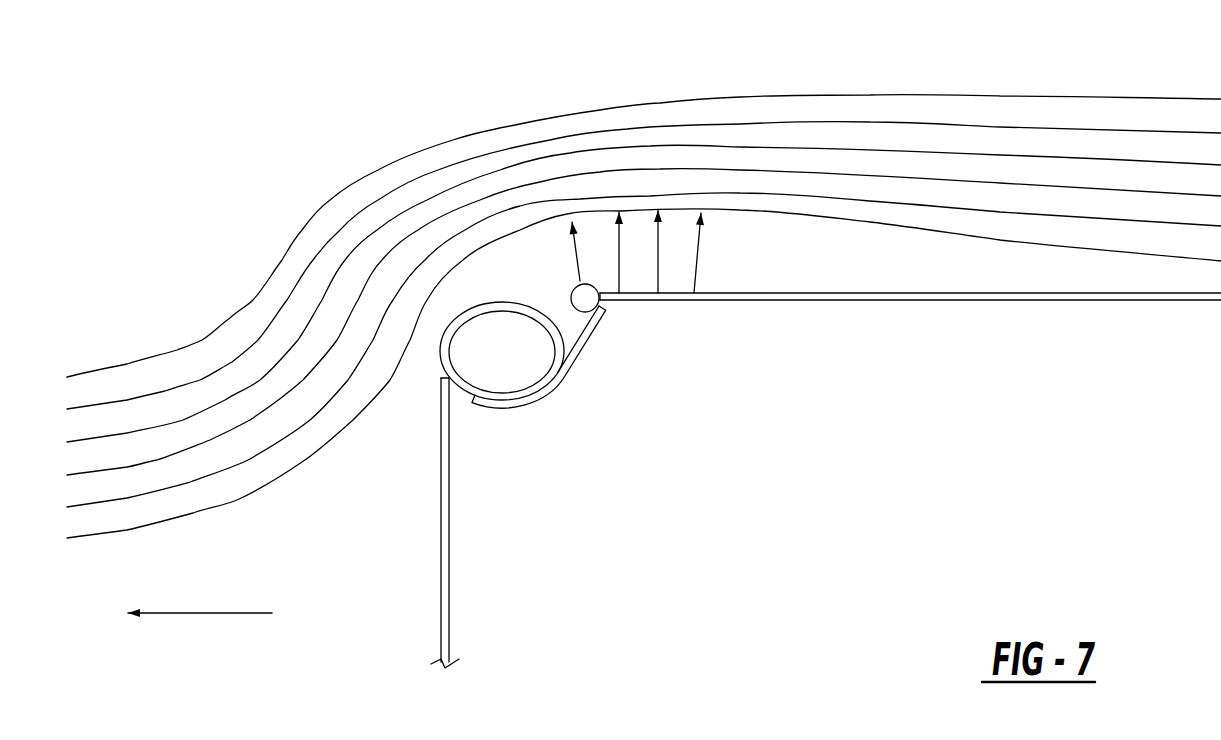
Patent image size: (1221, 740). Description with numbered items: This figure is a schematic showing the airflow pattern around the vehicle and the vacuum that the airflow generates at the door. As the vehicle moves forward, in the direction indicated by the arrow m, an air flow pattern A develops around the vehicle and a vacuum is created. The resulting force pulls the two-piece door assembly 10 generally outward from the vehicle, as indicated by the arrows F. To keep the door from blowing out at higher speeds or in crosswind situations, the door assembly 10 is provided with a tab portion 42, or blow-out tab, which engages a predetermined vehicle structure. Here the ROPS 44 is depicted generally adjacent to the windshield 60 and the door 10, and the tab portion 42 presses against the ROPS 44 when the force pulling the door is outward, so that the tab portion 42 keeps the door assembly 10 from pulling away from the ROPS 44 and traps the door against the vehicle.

The two-piece door assembly 10 is at (838, 317).
The tab portion 42 is at (555, 408).
The ROPS 44 is at (483, 303).
The windshield 60 is at (449, 548).
The air flow pattern A is at (864, 95).
The outward force arrows F is at (697, 252).
The forward movement arrow m is at (212, 613).